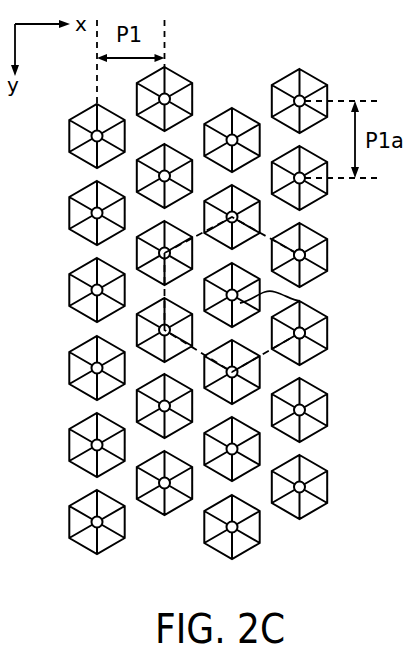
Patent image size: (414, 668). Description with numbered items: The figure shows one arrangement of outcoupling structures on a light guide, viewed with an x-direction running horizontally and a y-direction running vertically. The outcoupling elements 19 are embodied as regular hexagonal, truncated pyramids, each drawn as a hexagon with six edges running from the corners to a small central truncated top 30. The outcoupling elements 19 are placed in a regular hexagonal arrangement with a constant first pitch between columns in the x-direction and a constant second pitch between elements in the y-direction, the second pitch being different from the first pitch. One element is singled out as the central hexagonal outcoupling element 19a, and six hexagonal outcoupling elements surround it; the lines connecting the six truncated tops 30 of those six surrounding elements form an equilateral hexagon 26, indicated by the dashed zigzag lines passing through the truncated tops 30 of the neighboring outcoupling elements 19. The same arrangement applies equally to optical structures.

The outcoupling elements 19 is at (318, 413).
The central hexagonal outcoupling element 19a is at (304, 332).
The equilateral hexagon 26 is at (302, 296).
The truncated tops 30 is at (305, 253).